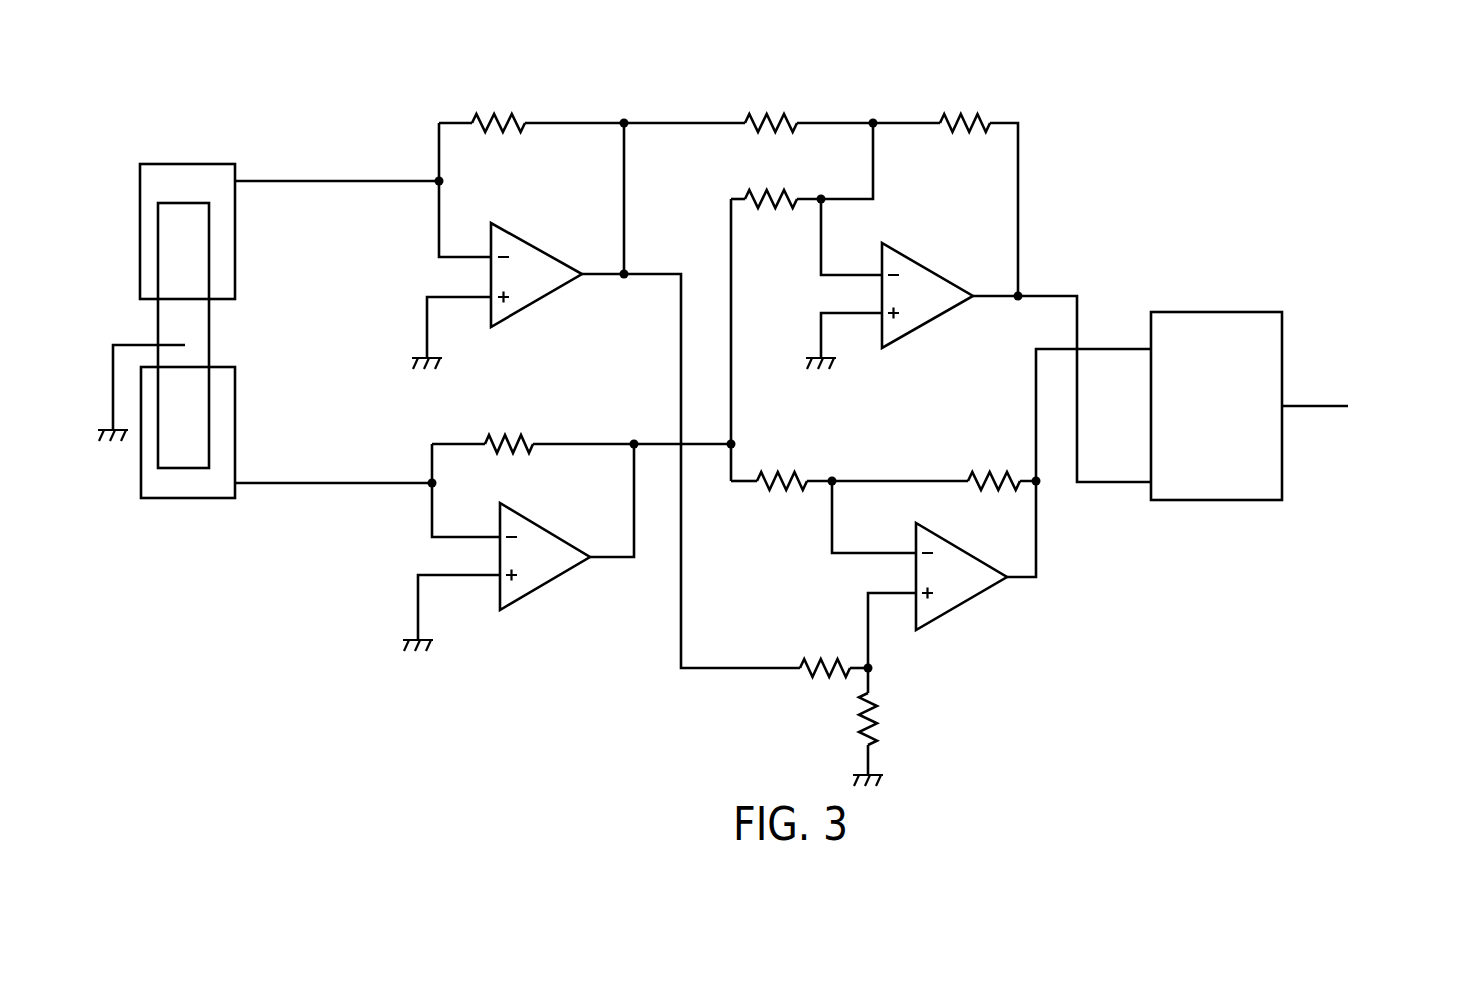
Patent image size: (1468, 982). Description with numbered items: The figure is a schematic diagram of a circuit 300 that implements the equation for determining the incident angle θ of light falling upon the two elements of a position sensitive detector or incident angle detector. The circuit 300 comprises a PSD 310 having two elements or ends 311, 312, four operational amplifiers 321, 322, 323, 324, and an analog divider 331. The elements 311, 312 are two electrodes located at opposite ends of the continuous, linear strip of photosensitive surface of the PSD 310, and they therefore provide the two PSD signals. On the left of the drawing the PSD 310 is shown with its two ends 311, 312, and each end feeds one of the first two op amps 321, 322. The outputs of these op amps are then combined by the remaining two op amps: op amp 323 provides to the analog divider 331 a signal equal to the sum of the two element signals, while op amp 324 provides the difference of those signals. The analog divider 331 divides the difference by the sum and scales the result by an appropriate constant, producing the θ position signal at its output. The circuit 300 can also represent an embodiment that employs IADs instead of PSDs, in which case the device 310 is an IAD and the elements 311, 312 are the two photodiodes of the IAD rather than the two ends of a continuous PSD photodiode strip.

The circuit 300 is at (1272, 47).
The PSD 310 is at (178, 500).
The element 311 is at (235, 232).
The element 312 is at (235, 450).
The operational amplifier 321 is at (527, 308).
The operational amplifier 322 is at (530, 593).
The operational amplifier 323 is at (912, 333).
The operational amplifier 324 is at (950, 612).
The analog divider 331 is at (1205, 500).